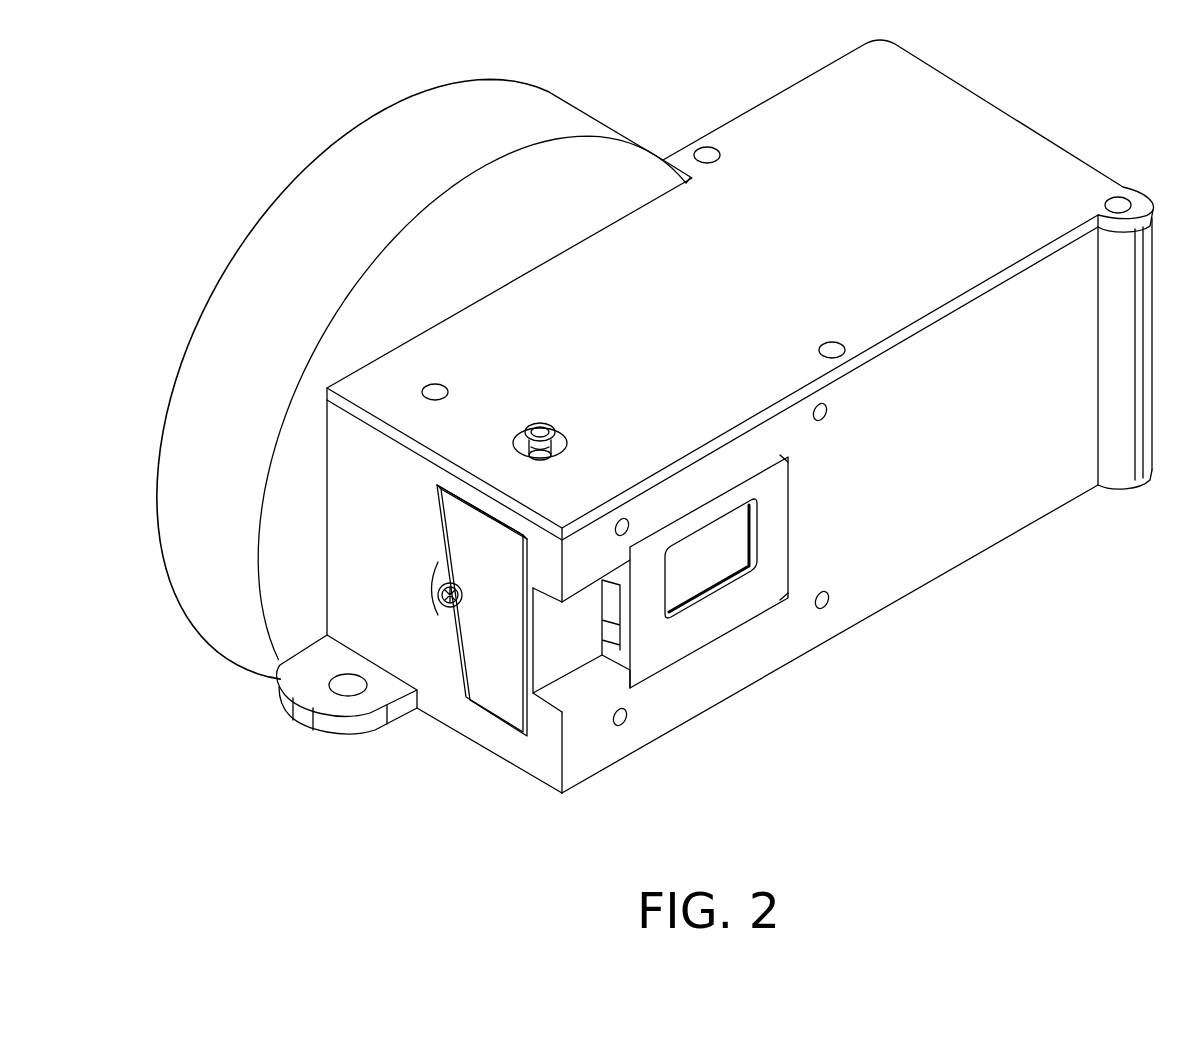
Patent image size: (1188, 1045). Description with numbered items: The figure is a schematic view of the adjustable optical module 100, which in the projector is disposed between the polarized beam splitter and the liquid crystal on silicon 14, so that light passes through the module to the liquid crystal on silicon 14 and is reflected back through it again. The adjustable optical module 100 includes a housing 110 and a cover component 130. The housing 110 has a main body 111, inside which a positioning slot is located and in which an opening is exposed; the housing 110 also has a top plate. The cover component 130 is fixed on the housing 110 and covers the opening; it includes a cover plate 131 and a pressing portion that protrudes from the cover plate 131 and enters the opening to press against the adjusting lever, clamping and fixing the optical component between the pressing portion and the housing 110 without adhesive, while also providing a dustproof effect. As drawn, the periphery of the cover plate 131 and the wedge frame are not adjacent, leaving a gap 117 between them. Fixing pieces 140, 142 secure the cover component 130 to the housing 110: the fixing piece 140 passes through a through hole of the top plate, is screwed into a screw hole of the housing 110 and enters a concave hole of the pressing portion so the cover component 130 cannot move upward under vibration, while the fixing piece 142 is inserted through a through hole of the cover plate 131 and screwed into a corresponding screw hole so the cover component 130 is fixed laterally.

The adjustable optical module 100 is at (1080, 68).
The housing 110 is at (715, 416).
The main body 111 is at (992, 547).
The liquid crystal on silicon 14 is at (718, 600).
The gap 117 is at (462, 500).
The cover component 130 is at (480, 672).
The cover plate 131 is at (495, 698).
The fixing piece 140 is at (540, 422).
The fixing piece 142 is at (450, 608).